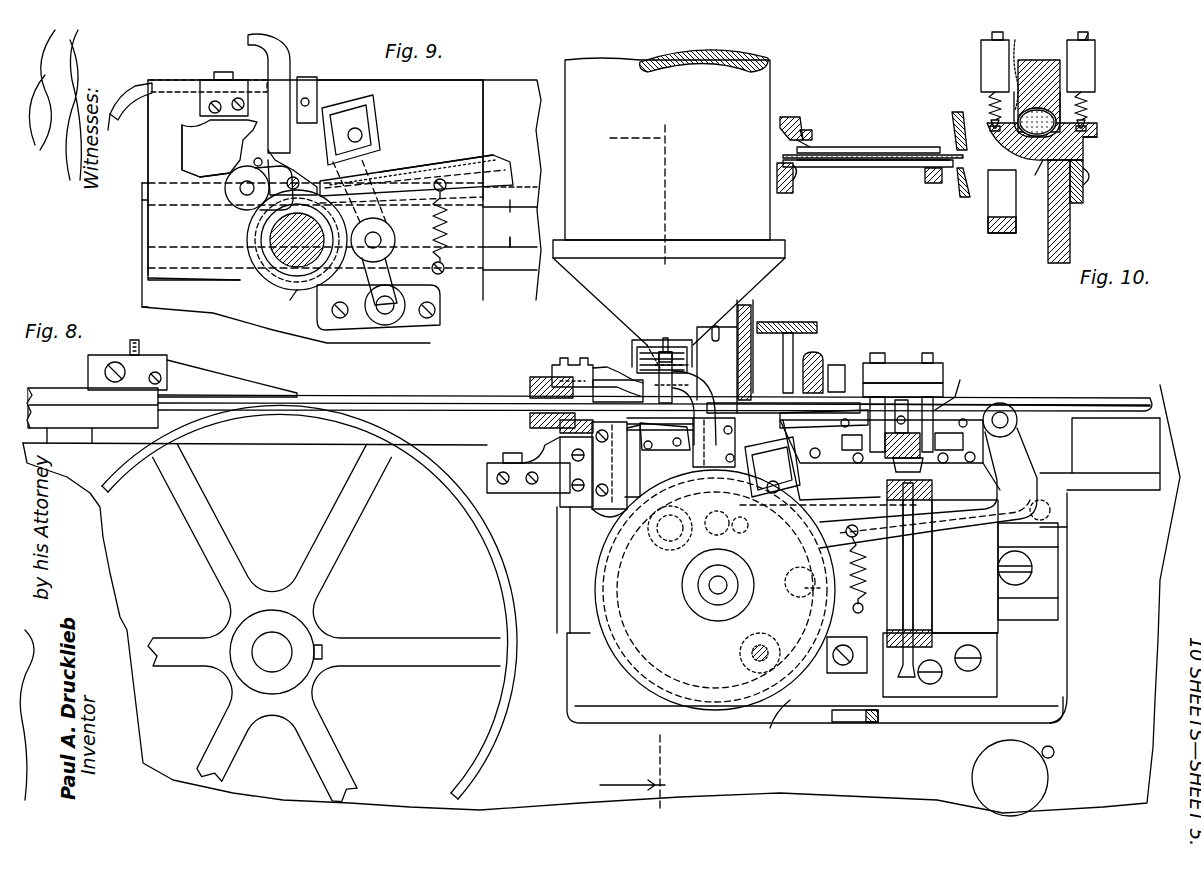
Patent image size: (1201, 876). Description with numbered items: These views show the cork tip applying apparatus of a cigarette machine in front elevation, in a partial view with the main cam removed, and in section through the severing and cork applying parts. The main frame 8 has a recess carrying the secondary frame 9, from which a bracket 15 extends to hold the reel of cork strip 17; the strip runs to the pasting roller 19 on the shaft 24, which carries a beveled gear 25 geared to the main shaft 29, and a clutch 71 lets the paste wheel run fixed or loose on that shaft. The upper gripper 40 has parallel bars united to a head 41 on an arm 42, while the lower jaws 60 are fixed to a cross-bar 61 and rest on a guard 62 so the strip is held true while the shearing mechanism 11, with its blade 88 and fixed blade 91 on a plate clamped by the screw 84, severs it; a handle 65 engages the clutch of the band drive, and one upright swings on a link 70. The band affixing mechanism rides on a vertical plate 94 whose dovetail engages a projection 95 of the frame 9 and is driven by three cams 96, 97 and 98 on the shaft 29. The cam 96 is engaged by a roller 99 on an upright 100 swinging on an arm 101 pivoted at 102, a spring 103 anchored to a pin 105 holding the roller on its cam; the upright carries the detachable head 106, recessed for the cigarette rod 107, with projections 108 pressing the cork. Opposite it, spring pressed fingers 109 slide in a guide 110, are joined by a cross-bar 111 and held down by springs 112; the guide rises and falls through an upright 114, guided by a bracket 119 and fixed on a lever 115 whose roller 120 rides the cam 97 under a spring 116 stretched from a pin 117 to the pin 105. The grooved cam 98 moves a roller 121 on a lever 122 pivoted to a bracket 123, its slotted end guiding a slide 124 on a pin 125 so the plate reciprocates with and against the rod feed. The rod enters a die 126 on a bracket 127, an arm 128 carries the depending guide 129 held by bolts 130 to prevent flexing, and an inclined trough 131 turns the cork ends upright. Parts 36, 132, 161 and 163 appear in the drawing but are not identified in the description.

In FIG. 8, the main frame 8 is at (607, 603).
In FIG. 9, the secondary frame 9 is at (148, 283).
In FIG. 8, the secondary frame 9 is at (572, 658).
In FIG. 8, the shearing mechanism 11 is at (646, 462).
In FIG. 8, the bracket 15 is at (717, 356).
In FIG. 10, the cork strip 17 is at (1028, 66).
In FIG. 8, the cork strip 17 is at (660, 434).
In FIG. 8, the pasting roller 19 is at (652, 345).
In FIG. 8, the shaft 24 is at (828, 367).
In FIG. 8, the beveled gear 25 is at (757, 312).
In FIG. 9, the main shaft 29 is at (275, 243).
In FIG. 8, the main shaft 29 is at (715, 598).
In FIG. 8, the hopper 36 is at (669, 197).
In FIG. 10, the upper gripper 40 is at (866, 147).
In FIG. 10, the base or head 41 is at (814, 128).
In FIG. 10, the arm 42 is at (793, 115).
In FIG. 10, the lower jaws 60 is at (855, 167).
In FIG. 10, the cross-bar 61 is at (793, 189).
In FIG. 9, the guard 62 is at (120, 129).
In FIG. 10, the guard 62 is at (933, 185).
In FIG. 8, the guard 62 is at (552, 460).
In FIG. 8, the handle 65 is at (860, 722).
In FIG. 8, the link 70 is at (1060, 499).
In FIG. 8, the clutch 71 is at (823, 352).
In FIG. 8, the clamping screw 84 is at (815, 322).
In FIG. 10, the blade 88 is at (952, 115).
In FIG. 10, the fixed blade 91 is at (964, 200).
In FIG. 9, the plate 94 is at (165, 150).
In FIG. 10, the plate 94 is at (1002, 201).
In FIG. 8, the plate 94 is at (563, 548).
In FIG. 9, the projection 95 is at (148, 200).
In FIG. 8, the projection 95 is at (1033, 613).
In FIG. 9, the cam 96 is at (258, 284).
In FIG. 9, the cam 97 is at (289, 290).
In FIG. 8, the cam 98 is at (771, 726).
In FIG. 9, the roller 99 is at (255, 158).
In FIG. 9, the upright 100 is at (206, 151).
In FIG. 8, the upright 100 is at (636, 469).
In FIG. 9, the arm 101 is at (462, 165).
In FIG. 8, the arm 101 is at (960, 493).
In FIG. 8, the pivot 102 is at (1000, 410).
In FIG. 9, the coiled spring 103 is at (444, 267).
In FIG. 10, the pin 105 is at (1076, 225).
In FIG. 9, the detachable head 106 is at (152, 110).
In FIG. 10, the detachable head 106 is at (1005, 142).
In FIG. 8, the detachable head 106 is at (127, 365).
In FIG. 10, the cigarette rod 107 is at (1040, 162).
In FIG. 8, the cigarette rod 107 is at (440, 396).
In FIG. 9, the projections 108 is at (232, 78).
In FIG. 10, the projections 108 is at (1098, 128).
In FIG. 10, the spring pressed fingers 109 is at (990, 36).
In FIG. 8, the spring pressed fingers 109 is at (665, 336).
In FIG. 10, the guide 110 is at (1087, 60).
In FIG. 8, the guide 110 is at (683, 377).
In FIG. 8, the cross-bar 111 is at (670, 350).
In FIG. 10, the coiled springs 112 is at (990, 100).
In FIG. 9, the upright 114 is at (282, 92).
In FIG. 8, the upright 114 is at (712, 404).
In FIG. 9, the lever 115 is at (506, 158).
In FIG. 9, the spring 116 is at (460, 227).
In FIG. 8, the spring 116 is at (876, 575).
In FIG. 9, the pin 117 is at (441, 178).
In FIG. 8, the pin 117 is at (850, 526).
In FIG. 9, the bracket 119 is at (318, 88).
In FIG. 8, the bracket 119 is at (716, 442).
In FIG. 9, the cam roller 120 is at (225, 190).
In FIG. 9, the cam roller 121 is at (395, 238).
In FIG. 8, the cam roller 121 is at (595, 378).
In FIG. 9, the lever 122 is at (400, 175).
In FIG. 8, the lever 122 is at (770, 450).
In FIG. 9, the bracket 123 is at (405, 325).
In FIG. 8, the bracket 123 is at (848, 668).
In FIG. 9, the slide 124 is at (352, 120).
In FIG. 8, the slide 124 is at (800, 440).
In FIG. 9, the pin 125 is at (362, 135).
In FIG. 8, the pin 125 is at (830, 462).
In FIG. 8, the die or guide 126 is at (530, 386).
In FIG. 8, the bracket 127 is at (560, 490).
In FIG. 10, the horizontally disposed arm 128 is at (1039, 86).
In FIG. 8, the horizontally disposed arm 128 is at (572, 365).
In FIG. 10, the depending guide 129 is at (1058, 85).
In FIG. 8, the depending guide 129 is at (640, 392).
In FIG. 8, the bolts 130 is at (640, 355).
In FIG. 8, the trough 131 is at (762, 403).
In FIG. 8, the plate 132 is at (824, 423).
In FIG. 8, the arm 161 is at (940, 405).
In FIG. 8, the block 163 is at (898, 353).